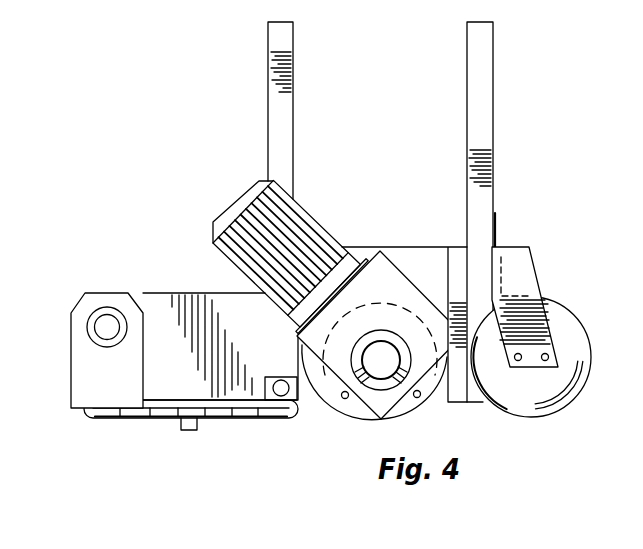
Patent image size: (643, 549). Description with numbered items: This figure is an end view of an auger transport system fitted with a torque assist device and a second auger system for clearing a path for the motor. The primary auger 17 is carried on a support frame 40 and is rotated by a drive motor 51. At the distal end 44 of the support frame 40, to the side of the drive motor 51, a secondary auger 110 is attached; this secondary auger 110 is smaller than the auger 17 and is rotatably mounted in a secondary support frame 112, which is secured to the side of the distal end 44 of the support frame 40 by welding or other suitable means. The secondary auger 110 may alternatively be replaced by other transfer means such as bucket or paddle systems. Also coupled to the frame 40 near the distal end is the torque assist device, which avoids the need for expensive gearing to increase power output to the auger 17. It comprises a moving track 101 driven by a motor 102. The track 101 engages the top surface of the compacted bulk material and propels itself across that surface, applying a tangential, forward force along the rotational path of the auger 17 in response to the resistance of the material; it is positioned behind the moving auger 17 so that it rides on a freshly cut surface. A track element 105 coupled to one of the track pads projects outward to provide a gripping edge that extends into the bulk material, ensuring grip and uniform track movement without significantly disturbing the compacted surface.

The auger 17 is at (339, 403).
The support frame 40 is at (488, 78).
The distal end 44 is at (487, 247).
The drive motor 51 is at (307, 208).
The track 101 is at (122, 418).
The motor 102 is at (108, 322).
The track element 105 is at (190, 422).
The secondary auger 110 is at (568, 333).
The secondary support frame 112 is at (522, 278).